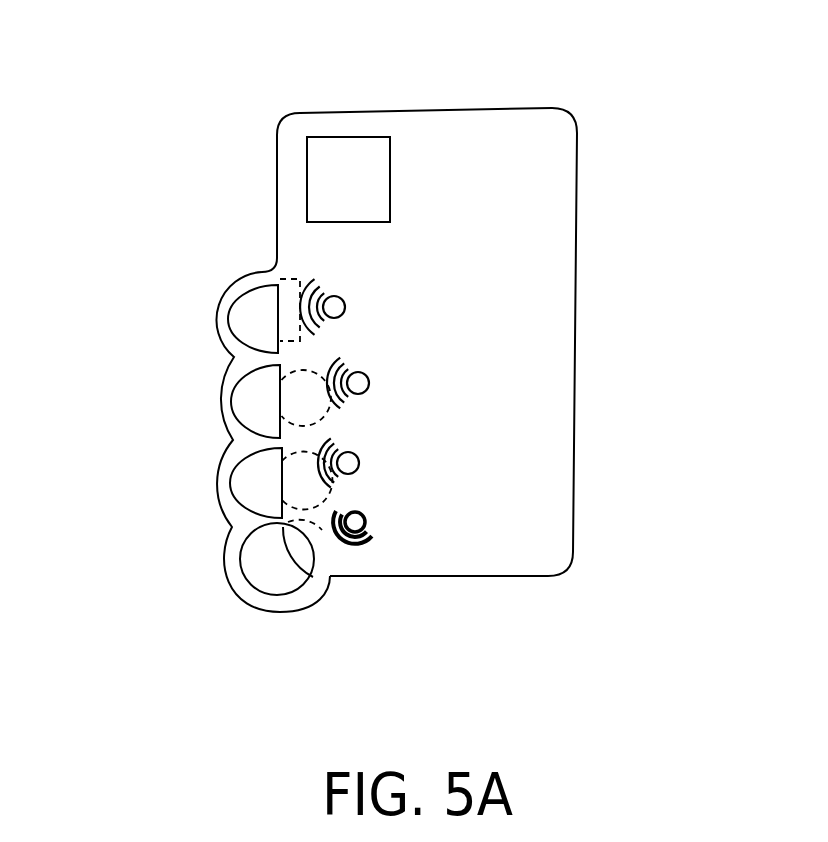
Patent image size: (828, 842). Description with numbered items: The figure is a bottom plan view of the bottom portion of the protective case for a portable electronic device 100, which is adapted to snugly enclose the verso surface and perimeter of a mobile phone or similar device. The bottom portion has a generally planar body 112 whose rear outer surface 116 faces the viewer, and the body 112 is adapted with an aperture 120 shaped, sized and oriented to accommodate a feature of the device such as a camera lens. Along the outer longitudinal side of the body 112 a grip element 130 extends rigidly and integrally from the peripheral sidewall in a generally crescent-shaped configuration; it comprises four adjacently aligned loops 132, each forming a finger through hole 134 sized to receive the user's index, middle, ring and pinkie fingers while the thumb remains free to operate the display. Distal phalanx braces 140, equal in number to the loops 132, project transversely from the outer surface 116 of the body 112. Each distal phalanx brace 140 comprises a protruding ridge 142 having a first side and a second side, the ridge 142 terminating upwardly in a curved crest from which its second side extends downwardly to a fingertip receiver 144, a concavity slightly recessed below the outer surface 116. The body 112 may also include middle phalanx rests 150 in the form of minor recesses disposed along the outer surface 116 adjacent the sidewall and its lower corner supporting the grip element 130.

The protective case for a portable electronic device 100 is at (252, 92).
The body 112 is at (577, 243).
The rear outer surface 116 is at (473, 393).
The aperture 120 is at (347, 150).
The grip element 130 is at (209, 436).
The loops 132 is at (217, 495).
The finger through holes 134 is at (250, 395).
The distal phalanx brace 140 is at (290, 294).
The ridge 142 is at (304, 294).
The fingertip receiver 144 is at (346, 308).
The middle phalanx rest 150 is at (293, 393).